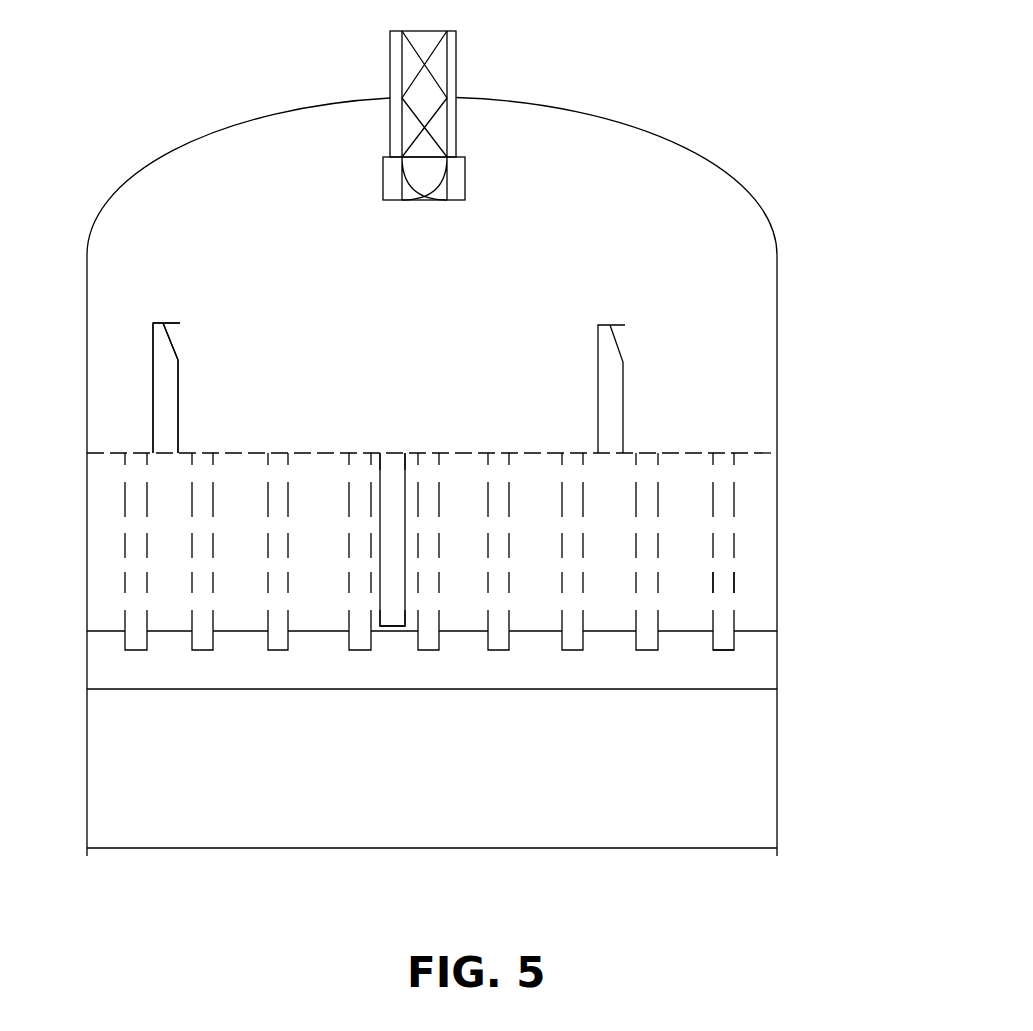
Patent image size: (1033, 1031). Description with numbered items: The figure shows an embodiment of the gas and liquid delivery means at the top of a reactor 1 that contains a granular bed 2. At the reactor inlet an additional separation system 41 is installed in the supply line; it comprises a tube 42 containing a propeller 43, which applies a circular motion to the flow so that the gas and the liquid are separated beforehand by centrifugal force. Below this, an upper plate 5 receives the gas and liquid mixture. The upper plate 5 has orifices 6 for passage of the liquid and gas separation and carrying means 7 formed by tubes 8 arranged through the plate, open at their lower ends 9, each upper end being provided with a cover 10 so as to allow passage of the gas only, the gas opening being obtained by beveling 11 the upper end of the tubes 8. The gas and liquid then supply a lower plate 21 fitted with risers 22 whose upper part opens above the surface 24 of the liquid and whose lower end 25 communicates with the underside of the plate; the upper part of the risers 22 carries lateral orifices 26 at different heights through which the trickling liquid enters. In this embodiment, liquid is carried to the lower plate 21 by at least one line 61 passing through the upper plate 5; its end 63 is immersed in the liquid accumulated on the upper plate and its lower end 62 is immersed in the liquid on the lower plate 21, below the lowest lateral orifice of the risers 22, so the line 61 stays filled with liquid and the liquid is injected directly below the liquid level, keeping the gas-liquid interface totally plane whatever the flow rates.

The reactor 1 is at (648, 133).
The granular bed 2 is at (768, 782).
The upper plate 5 is at (760, 455).
The orifices 6 is at (685, 453).
The gas separation and carrying means 7 is at (120, 365).
The tubes 8 is at (170, 396).
The lower ends 9 is at (158, 420).
The cover 10 is at (160, 323).
The beveling 11 is at (171, 339).
The lower plate 21 is at (96, 626).
The risers 22 is at (735, 510).
The surface of the liquid 24 is at (105, 527).
The lower end 25 is at (722, 651).
The lateral orifices 26 is at (725, 562).
The separation system 41 is at (451, 127).
The tube 42 is at (456, 52).
The propeller 43 is at (425, 65).
The line 61 is at (397, 487).
The lower end 62 is at (370, 612).
The end 63 is at (392, 457).